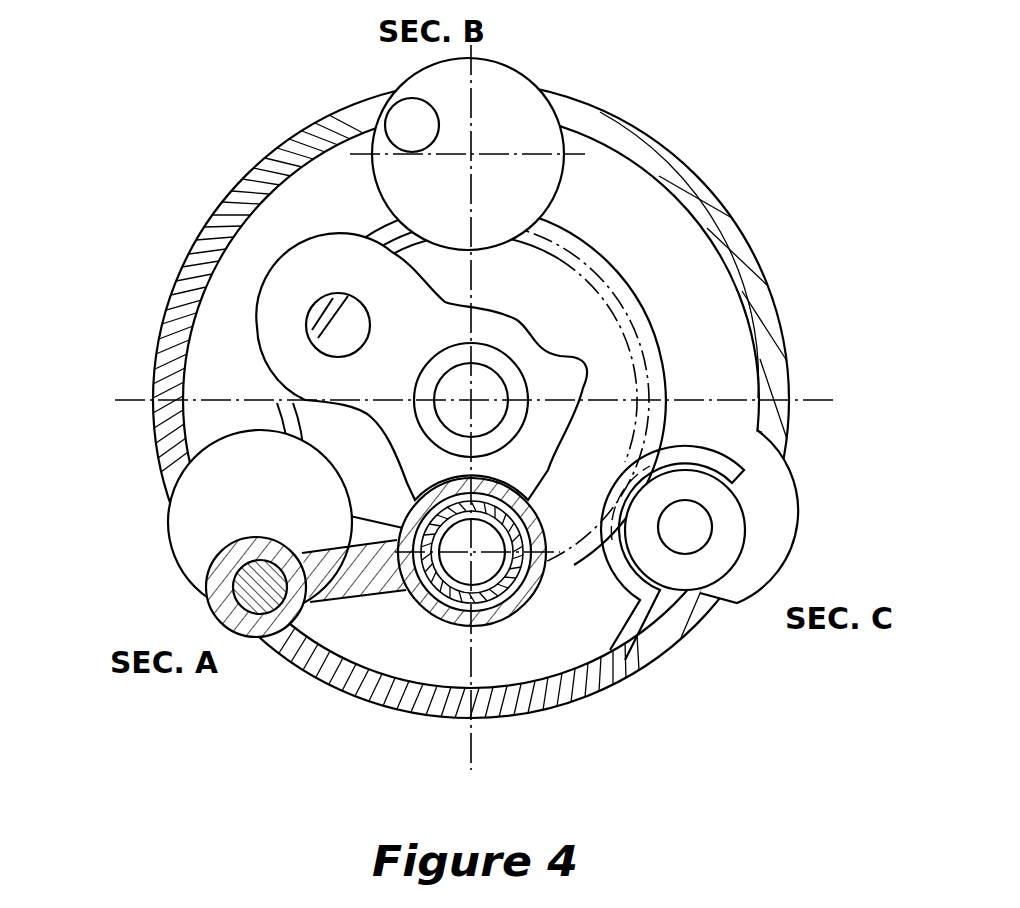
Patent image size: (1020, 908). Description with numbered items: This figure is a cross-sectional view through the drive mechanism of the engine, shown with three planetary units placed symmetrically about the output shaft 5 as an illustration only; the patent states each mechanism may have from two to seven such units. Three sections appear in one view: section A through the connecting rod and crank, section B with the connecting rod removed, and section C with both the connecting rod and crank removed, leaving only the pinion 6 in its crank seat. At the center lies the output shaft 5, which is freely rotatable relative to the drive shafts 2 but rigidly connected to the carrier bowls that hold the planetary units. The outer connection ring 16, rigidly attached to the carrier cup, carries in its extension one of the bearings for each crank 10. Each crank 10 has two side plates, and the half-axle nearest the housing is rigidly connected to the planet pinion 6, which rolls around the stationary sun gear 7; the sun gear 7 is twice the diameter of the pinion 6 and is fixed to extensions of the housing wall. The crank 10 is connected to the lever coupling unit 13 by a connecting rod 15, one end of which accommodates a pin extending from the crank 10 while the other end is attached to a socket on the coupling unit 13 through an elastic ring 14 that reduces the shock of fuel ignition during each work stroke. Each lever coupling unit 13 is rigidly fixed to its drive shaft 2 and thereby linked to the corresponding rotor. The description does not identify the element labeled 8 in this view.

The drive shaft 2 is at (500, 363).
The output shaft 5 is at (492, 392).
The planet pinion 6 is at (745, 567).
The sun gear 7 is at (650, 335).
The follower 8 is at (705, 577).
The crank 10 is at (505, 100).
The lever coupling unit 13 is at (560, 525).
The elastic ring 14 is at (452, 587).
The connecting rod 15 is at (225, 578).
The connection ring 16 is at (205, 250).